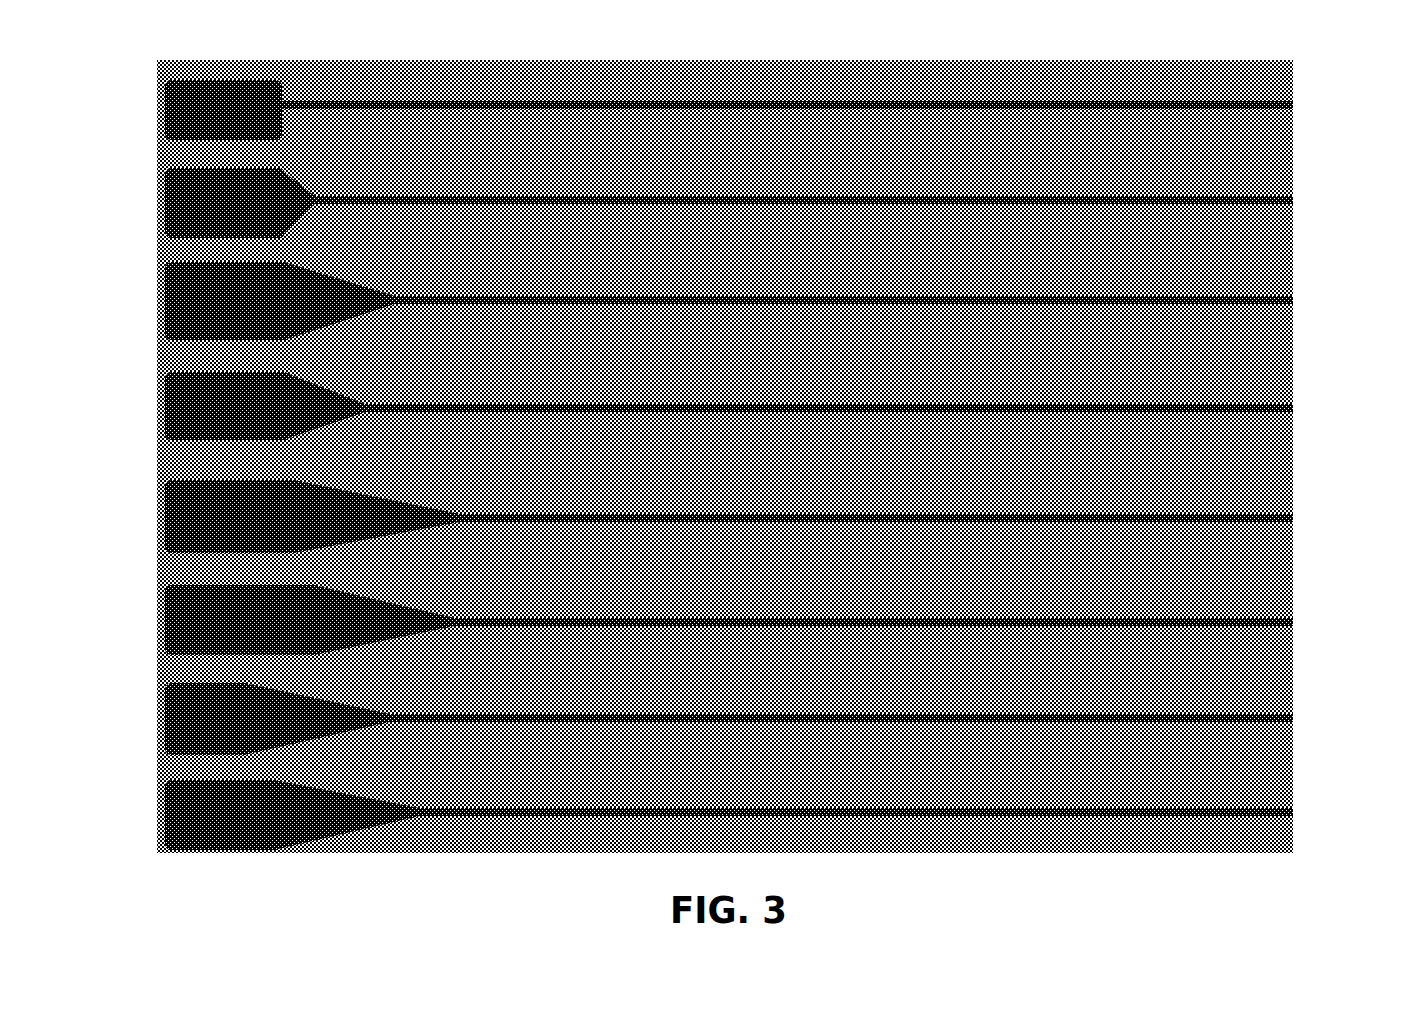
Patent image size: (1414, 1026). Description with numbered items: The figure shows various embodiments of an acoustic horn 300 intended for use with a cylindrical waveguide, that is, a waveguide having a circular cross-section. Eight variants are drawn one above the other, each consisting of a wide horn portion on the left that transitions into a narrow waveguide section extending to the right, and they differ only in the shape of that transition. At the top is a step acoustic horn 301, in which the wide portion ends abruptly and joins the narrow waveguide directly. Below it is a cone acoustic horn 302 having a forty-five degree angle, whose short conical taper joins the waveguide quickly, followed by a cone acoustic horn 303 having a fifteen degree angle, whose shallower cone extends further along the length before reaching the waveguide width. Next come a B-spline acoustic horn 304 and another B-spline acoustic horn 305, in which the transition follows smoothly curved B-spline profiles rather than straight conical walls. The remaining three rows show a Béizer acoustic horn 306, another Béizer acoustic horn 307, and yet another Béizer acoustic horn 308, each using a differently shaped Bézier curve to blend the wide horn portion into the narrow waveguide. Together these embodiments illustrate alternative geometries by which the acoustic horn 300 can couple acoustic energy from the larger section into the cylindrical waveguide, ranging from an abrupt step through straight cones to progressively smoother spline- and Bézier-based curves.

The acoustic horn 300 is at (1316, 47).
The step acoustic horn 301 is at (150, 107).
The cone acoustic horn having 45 degree angle 302 is at (150, 196).
The cone acoustic horn having 15 degree angle 303 is at (150, 313).
The B-spline acoustic horn 304 is at (150, 403).
The another B-spline acoustic horn 305 is at (150, 521).
The Béizer acoustic horn 306 is at (150, 615).
The another Béizer acoustic horn 307 is at (150, 716).
The yet another Béizer acoustic horn 308 is at (150, 806).